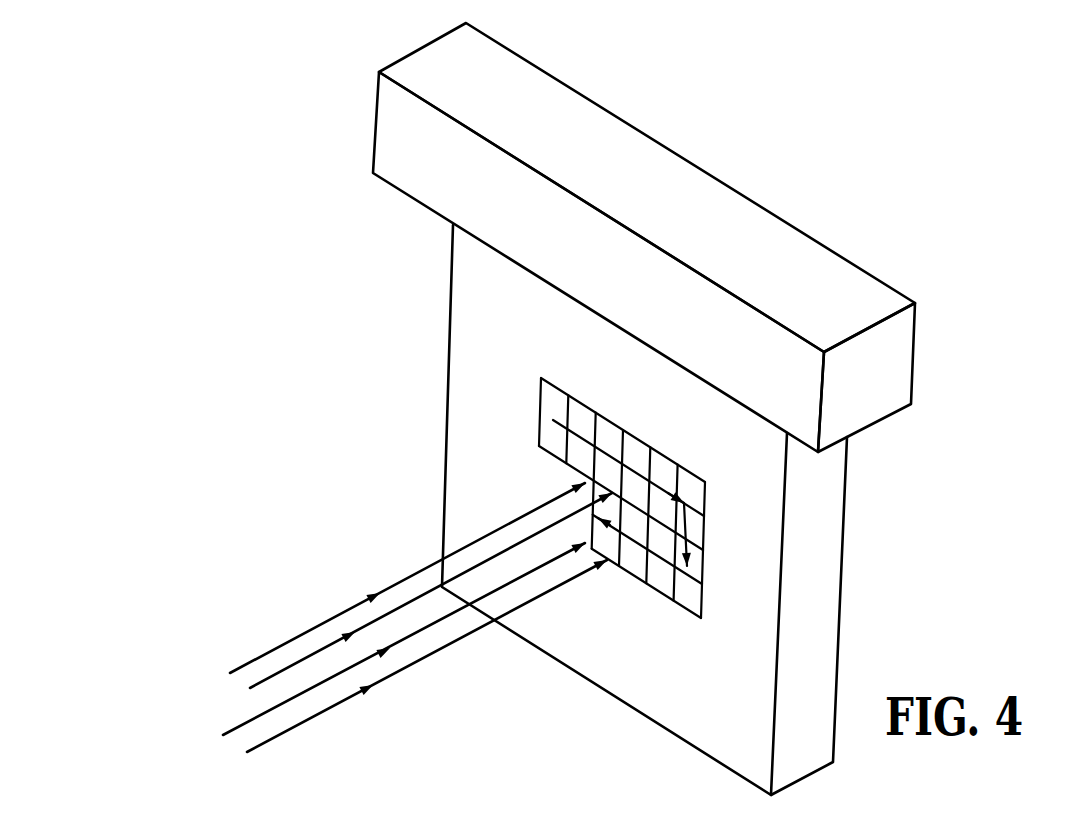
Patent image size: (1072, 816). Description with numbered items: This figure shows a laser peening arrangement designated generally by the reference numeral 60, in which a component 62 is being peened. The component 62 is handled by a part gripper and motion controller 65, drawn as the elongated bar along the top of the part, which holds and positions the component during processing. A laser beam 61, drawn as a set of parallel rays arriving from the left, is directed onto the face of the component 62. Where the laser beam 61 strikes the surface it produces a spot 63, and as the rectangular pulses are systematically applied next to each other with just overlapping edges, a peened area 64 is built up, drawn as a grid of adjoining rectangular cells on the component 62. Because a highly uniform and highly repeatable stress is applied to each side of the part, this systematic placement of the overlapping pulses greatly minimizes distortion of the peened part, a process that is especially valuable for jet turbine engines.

The component being peened assembly 60 is at (805, 172).
The laser beam 61 is at (223, 653).
The component 62 is at (528, 339).
The spot 63 is at (598, 534).
The peened area 64 is at (658, 474).
The part gripper and motion controller 65 is at (782, 270).